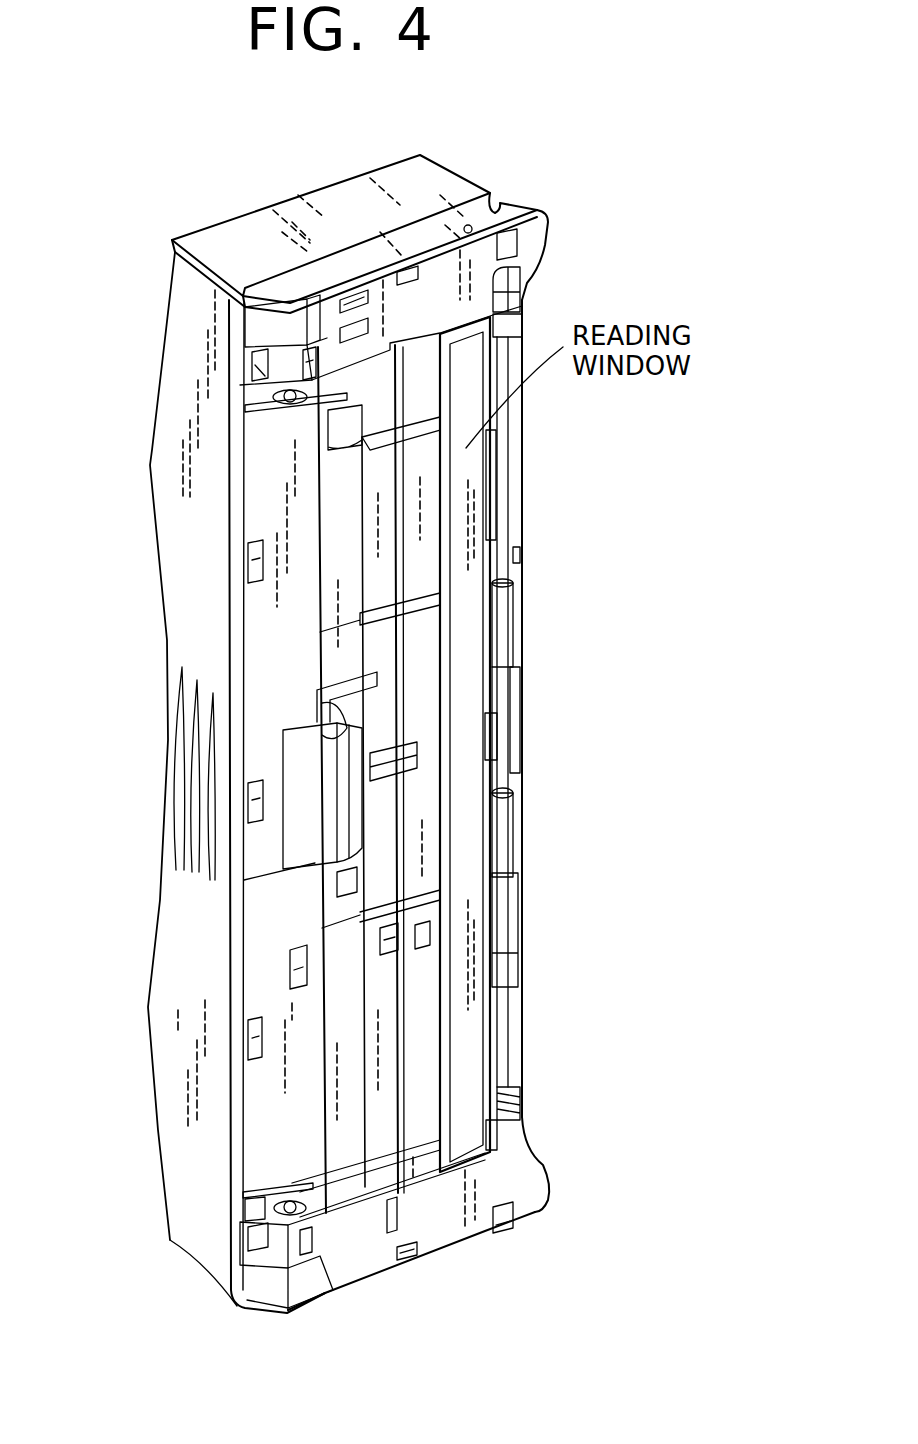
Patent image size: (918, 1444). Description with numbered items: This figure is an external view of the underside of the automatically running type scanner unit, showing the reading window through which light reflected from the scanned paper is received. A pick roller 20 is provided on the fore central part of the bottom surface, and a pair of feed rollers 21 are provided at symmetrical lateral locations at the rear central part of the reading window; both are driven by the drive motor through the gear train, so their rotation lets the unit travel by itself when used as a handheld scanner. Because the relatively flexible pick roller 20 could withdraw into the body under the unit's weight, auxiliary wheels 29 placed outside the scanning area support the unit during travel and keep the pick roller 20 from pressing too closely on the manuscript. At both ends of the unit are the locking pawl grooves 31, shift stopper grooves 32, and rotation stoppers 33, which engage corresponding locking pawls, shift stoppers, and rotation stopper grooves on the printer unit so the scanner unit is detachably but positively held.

The pick roller 20 is at (345, 745).
The feed rollers 21 is at (503, 647).
The auxiliary wheels 29 is at (273, 399).
The locking pawl grooves 31 is at (253, 323).
The shift stopper grooves 32 is at (413, 275).
The rotation stoppers 33 is at (540, 241).